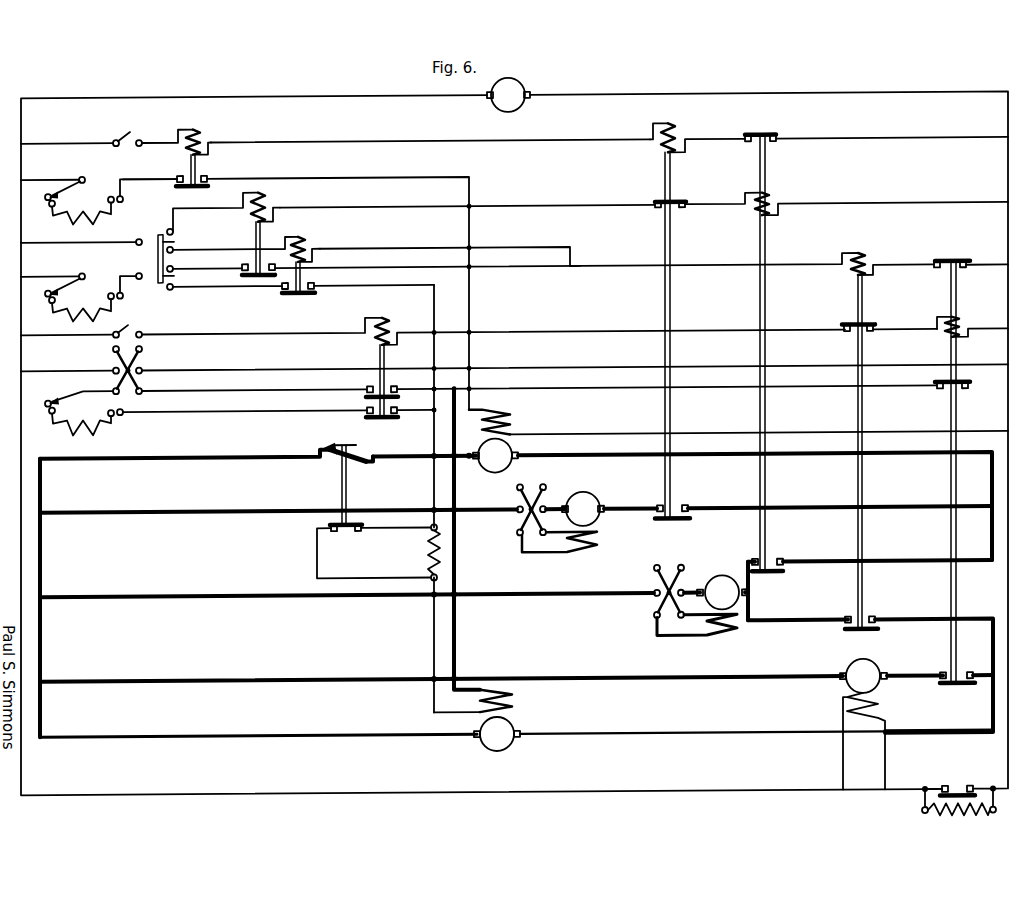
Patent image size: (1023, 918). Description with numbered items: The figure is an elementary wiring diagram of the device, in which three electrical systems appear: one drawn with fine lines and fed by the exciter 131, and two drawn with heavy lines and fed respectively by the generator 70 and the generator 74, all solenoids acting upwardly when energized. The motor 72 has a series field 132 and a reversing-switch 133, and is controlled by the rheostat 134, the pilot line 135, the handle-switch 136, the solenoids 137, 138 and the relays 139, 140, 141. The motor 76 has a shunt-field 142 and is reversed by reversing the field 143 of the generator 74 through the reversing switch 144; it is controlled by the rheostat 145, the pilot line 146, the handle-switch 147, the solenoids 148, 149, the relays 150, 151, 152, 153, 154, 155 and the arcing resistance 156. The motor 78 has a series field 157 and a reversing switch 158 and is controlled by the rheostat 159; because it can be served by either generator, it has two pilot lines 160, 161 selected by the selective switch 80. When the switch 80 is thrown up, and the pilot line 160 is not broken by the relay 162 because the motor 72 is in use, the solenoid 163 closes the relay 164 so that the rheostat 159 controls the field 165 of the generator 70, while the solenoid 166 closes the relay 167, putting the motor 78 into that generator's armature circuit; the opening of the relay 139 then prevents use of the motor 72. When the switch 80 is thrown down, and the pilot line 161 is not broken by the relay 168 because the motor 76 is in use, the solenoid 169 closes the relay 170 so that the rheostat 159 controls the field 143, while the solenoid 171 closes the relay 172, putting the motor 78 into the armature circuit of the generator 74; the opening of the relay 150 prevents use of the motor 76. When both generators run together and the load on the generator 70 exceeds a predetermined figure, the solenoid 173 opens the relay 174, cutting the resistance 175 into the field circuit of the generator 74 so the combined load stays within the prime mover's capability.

The exciter 131 is at (521, 110).
The handle-switch 136 is at (81, 131).
The solenoid 138 is at (201, 134).
The relay 140 is at (204, 184).
The pilot line 135 is at (316, 143).
The rheostat 134 is at (99, 200).
The rheostat 159 is at (78, 297).
The rheostat 145 is at (206, 412).
The selective switch 80 is at (158, 259).
The solenoid 163 is at (268, 206).
The pilot line 160 is at (490, 208).
The relay 162 is at (673, 205).
The solenoid 166 is at (771, 206).
The solenoid 169 is at (306, 244).
The pilot line 161 is at (505, 249).
The relay 164 is at (240, 274).
The solenoid 171 is at (862, 261).
The relay 168 is at (944, 263).
The relay 170 is at (316, 294).
The solenoid 149 is at (389, 326).
The pilot line 146 is at (507, 334).
The relay 150 is at (870, 327).
The solenoid 148 is at (961, 332).
The handle-switch 147 is at (88, 324).
The reversing switch 144 is at (141, 369).
The relay 152 is at (634, 394).
The relay 153 is at (397, 421).
The relay 151 is at (961, 396).
The field 165 is at (503, 414).
The solenoid 173 is at (355, 466).
The generator 70 is at (513, 455).
The relay 174 is at (343, 536).
The resistance 175 is at (425, 560).
The reversing-switch 133 is at (532, 488).
The motor 72 is at (592, 497).
The series field 132 is at (598, 543).
The relay 141 is at (667, 510).
The solenoid 137 is at (678, 134).
The relay 139 is at (767, 135).
The reversing switch 158 is at (670, 570).
The motor 78 is at (722, 580).
The relay 167 is at (770, 565).
The relay 172 is at (870, 622).
The series field 157 is at (704, 645).
The motor 76 is at (876, 669).
The relay 154 is at (967, 677).
The shunt-field 142 is at (880, 714).
The field 143 is at (513, 698).
The generator 74 is at (508, 731).
The relay 155 is at (962, 790).
The arcing resistance 156 is at (921, 816).